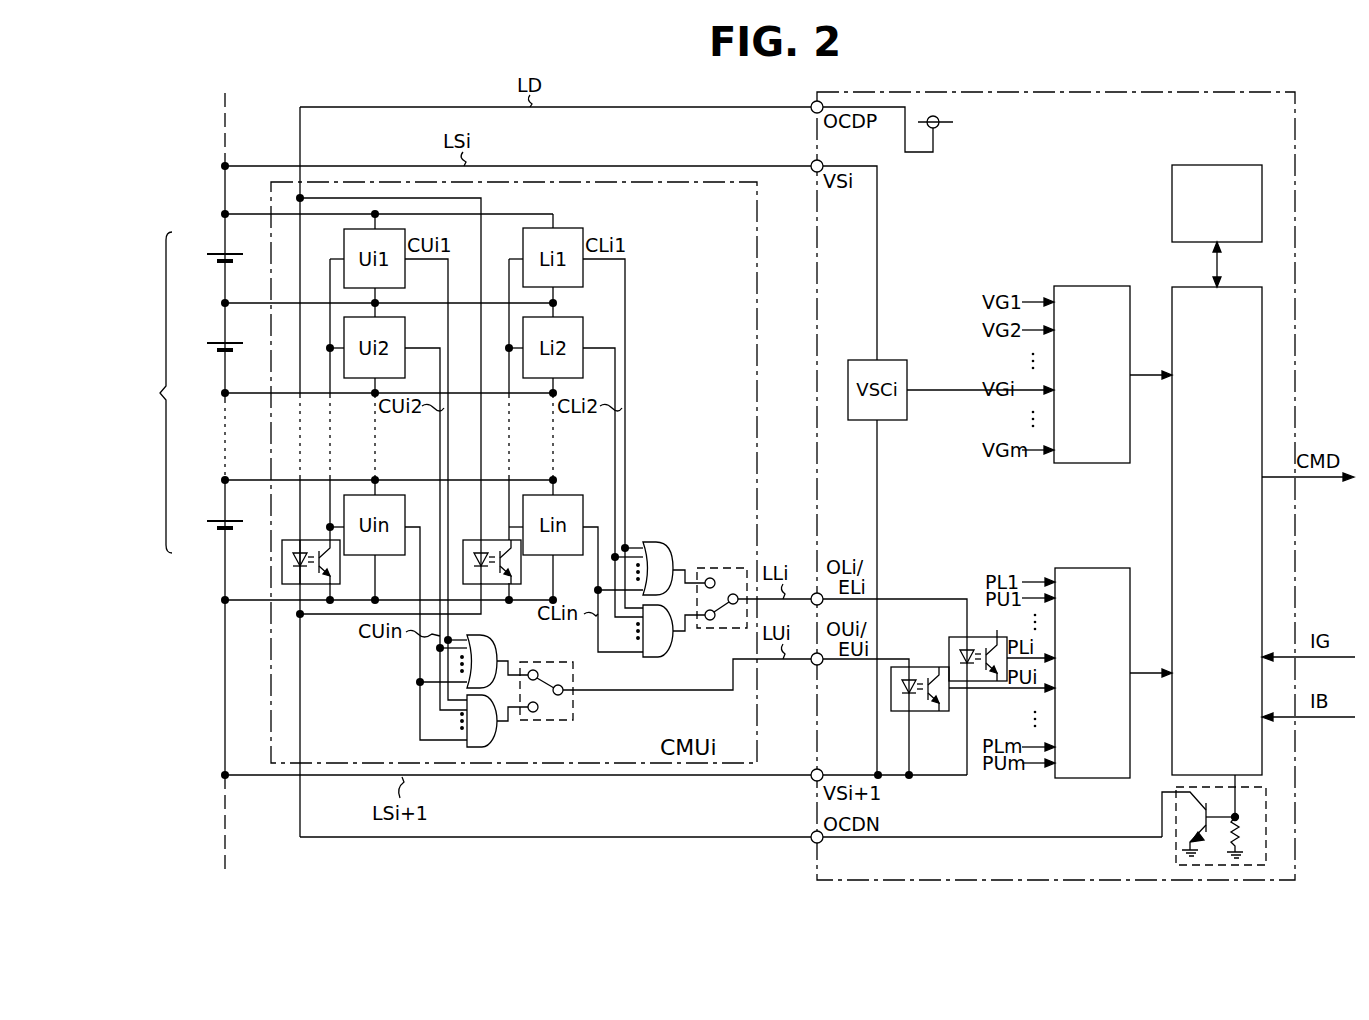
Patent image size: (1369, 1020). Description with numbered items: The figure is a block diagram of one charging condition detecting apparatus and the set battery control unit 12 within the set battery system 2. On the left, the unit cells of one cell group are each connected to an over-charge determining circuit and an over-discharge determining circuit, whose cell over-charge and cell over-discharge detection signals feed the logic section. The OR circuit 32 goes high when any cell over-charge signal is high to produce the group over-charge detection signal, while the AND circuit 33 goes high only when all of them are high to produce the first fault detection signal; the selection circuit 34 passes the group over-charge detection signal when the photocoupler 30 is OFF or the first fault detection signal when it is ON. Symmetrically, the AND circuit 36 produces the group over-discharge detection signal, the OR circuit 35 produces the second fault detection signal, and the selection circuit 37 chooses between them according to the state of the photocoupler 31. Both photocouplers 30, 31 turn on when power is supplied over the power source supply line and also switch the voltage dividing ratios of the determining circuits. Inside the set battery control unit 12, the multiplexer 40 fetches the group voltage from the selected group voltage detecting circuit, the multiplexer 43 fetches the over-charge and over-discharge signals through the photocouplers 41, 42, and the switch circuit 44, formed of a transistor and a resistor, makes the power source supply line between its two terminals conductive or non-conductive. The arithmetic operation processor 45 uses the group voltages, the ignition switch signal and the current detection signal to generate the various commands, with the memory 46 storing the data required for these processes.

The set battery system 2 is at (148, 142).
The set battery control unit 12 is at (1295, 115).
The photocoupler 30 is at (290, 540).
The photocoupler 31 is at (466, 540).
The logical sum (OR) circuit 32 is at (488, 642).
The logical product (AND) circuit 33 is at (488, 743).
The selection circuit 34 is at (560, 722).
The OR circuit 35 is at (668, 550).
The AND circuit 36 is at (668, 650).
The selection circuit 37 is at (736, 568).
The multiplexer 40 is at (1100, 286).
The photocoupler 41 is at (930, 712).
The photocoupler 42 is at (953, 648).
The multiplexer 43 is at (1106, 568).
The switch circuit 44 is at (1176, 854).
The arithmetic operation processor 45 is at (1235, 287).
The memory 46 is at (1233, 166).